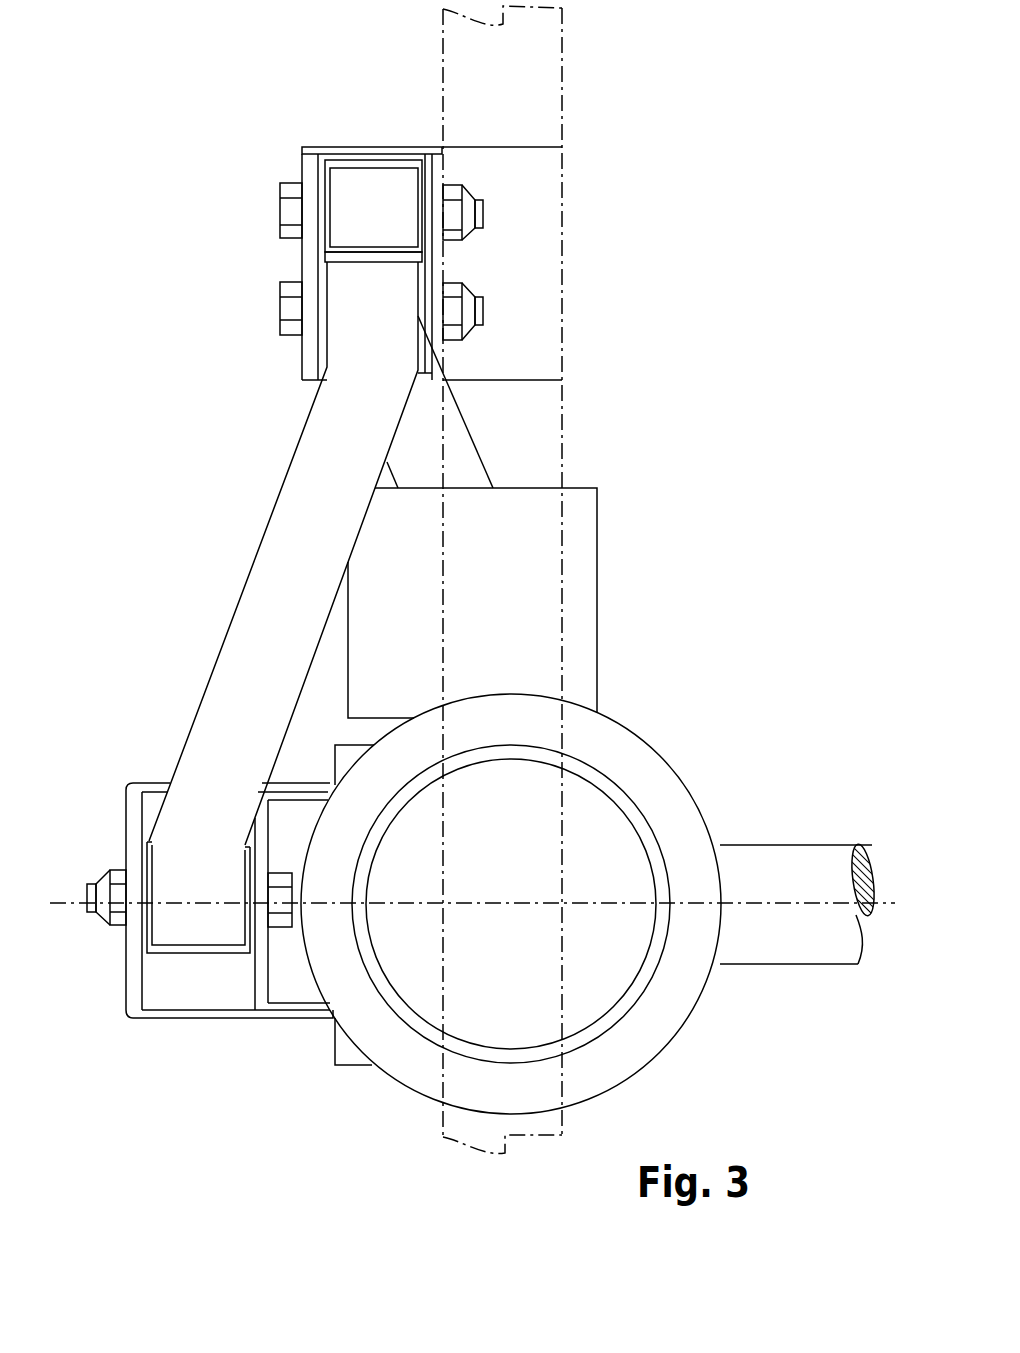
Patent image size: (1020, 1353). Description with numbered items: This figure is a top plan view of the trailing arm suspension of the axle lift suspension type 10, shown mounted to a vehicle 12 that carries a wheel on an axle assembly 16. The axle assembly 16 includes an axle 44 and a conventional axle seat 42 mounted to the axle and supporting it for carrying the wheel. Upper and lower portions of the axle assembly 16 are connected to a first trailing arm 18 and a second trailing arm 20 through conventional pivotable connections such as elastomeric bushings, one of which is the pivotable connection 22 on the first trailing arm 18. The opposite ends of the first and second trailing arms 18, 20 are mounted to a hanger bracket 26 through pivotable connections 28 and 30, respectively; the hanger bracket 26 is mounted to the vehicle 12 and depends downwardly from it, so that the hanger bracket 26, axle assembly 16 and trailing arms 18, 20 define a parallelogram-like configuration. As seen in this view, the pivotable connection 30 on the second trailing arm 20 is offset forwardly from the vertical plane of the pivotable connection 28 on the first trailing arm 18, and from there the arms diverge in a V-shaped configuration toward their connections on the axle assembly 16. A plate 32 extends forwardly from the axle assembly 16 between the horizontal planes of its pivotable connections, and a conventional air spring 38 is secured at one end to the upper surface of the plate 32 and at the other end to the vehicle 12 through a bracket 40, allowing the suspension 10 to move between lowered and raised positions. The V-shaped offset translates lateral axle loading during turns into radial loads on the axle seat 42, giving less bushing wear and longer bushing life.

The axle lift suspension 10 is at (797, 633).
The vehicle 12 is at (545, 97).
The axle assembly 16 is at (315, 1042).
The first trailing arm 18 is at (262, 590).
The second trailing arm 20 is at (473, 463).
The pivotable connection 22 is at (147, 857).
The hanger bracket 26 is at (445, 258).
The pivotable connection 28 is at (280, 312).
The pivotable connection 30 is at (281, 184).
The plate 32 is at (598, 537).
The air spring 38 is at (702, 808).
The bracket 40 is at (655, 972).
The axle seat 42 is at (212, 1020).
The axle 44 is at (794, 890).